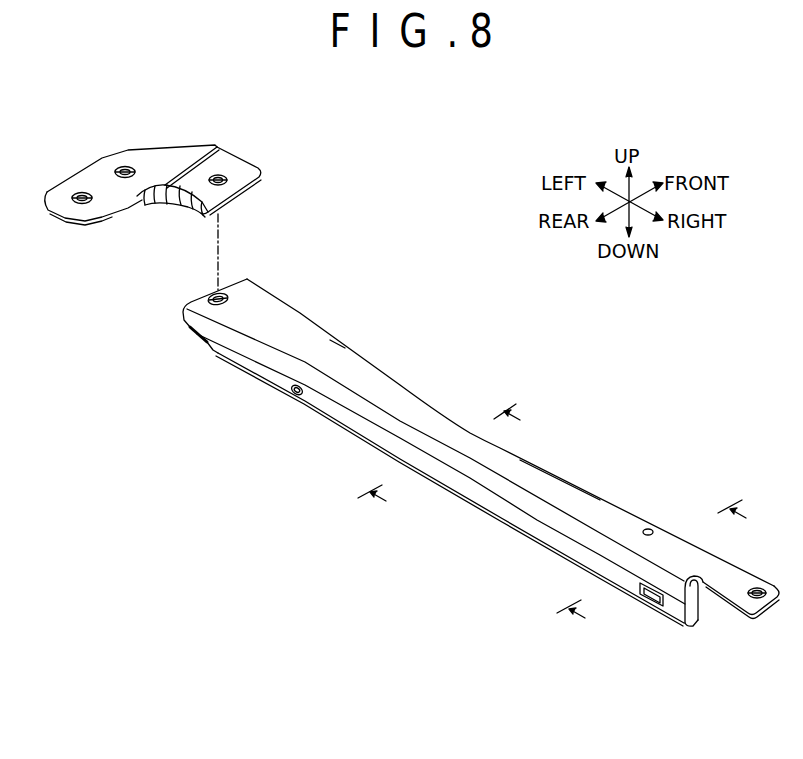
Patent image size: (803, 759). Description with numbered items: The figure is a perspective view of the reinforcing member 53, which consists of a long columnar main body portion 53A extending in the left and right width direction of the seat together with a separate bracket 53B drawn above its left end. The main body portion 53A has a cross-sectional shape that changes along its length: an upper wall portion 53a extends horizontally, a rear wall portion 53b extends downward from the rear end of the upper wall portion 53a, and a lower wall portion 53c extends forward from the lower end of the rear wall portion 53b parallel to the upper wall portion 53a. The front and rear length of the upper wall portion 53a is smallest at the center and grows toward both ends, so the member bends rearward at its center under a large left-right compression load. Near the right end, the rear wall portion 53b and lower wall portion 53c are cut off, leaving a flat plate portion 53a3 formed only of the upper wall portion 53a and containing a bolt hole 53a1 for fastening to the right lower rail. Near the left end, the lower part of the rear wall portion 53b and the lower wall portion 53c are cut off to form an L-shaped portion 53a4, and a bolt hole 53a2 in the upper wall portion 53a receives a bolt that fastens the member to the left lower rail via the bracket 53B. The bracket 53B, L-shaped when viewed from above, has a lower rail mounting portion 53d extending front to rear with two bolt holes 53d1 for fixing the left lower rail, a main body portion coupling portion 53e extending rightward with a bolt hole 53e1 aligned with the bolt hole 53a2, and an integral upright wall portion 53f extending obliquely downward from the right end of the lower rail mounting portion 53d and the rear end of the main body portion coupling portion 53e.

The reinforcing member 53 is at (480, 478).
The upper wall portion 53a is at (333, 343).
The main body portion 53A is at (551, 485).
The bracket 53B is at (188, 187).
The bolt hole 53a1 is at (758, 587).
The bolt hole 53a2 is at (220, 297).
The flat plate portion 53a3 is at (721, 604).
The L-shaped portion 53a4 is at (192, 334).
The rear wall portion 53b is at (337, 420).
The lower wall portion 53c is at (693, 628).
The lower rail mounting portion 53d is at (80, 193).
The bolt holes 53d1 is at (84, 195).
The main body portion coupling portion 53e is at (247, 158).
The bolt hole 53e1 is at (218, 176).
The upright wall portion 53f is at (177, 200).